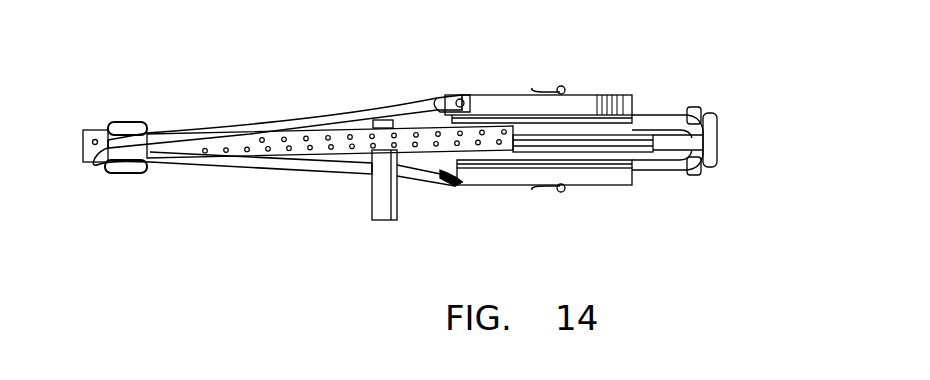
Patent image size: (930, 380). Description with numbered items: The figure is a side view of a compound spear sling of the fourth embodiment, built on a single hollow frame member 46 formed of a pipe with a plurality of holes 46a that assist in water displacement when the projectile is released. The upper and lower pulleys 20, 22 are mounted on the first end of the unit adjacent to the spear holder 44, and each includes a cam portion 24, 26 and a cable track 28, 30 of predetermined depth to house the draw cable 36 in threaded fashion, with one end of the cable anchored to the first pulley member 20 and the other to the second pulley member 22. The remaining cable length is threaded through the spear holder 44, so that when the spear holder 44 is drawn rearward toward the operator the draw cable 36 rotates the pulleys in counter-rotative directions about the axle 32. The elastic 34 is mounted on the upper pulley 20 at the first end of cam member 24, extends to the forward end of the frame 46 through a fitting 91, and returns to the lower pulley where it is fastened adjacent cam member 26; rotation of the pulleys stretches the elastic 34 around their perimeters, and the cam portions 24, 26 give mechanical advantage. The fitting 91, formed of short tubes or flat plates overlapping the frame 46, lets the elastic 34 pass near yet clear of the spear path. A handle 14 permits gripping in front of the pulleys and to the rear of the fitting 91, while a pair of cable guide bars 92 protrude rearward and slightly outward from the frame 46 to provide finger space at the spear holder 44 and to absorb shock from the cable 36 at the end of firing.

The handle 14 is at (386, 222).
The first pulley member 20 is at (505, 95).
The second pulley member 22 is at (497, 186).
The cam portion 24 is at (612, 95).
The cam portion 26 is at (563, 187).
The cable track 28 is at (432, 97).
The cable track 30 is at (440, 178).
The axle 32 is at (570, 95).
The elastic band 34 is at (290, 120).
The draw cable 36 is at (672, 115).
The spear holder 44 is at (722, 131).
The frame member 46 is at (240, 152).
The holes 46a is at (287, 152).
The fitting 91 is at (118, 122).
The cable guide bars 92 is at (704, 108).